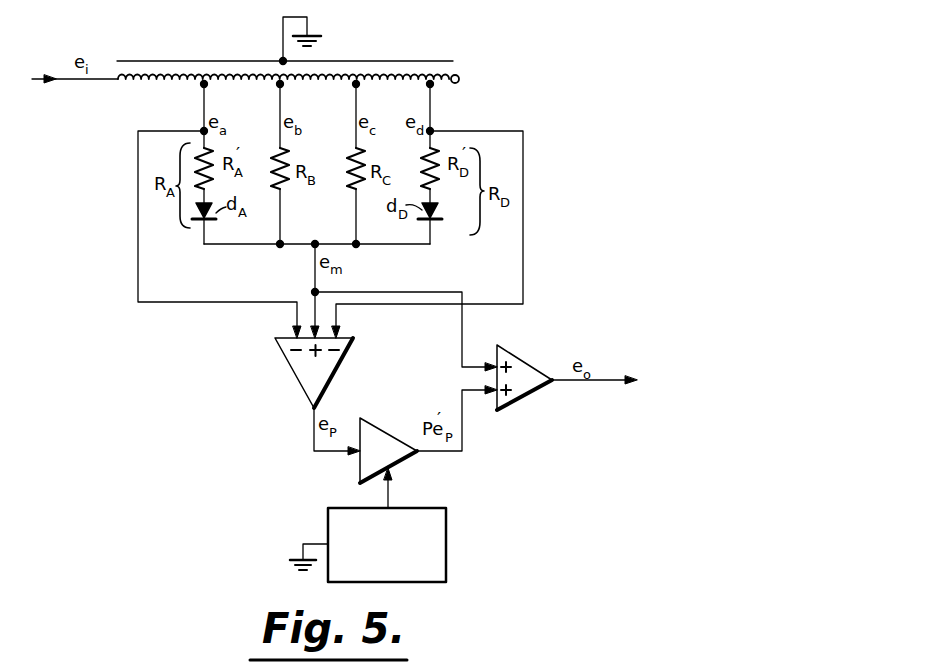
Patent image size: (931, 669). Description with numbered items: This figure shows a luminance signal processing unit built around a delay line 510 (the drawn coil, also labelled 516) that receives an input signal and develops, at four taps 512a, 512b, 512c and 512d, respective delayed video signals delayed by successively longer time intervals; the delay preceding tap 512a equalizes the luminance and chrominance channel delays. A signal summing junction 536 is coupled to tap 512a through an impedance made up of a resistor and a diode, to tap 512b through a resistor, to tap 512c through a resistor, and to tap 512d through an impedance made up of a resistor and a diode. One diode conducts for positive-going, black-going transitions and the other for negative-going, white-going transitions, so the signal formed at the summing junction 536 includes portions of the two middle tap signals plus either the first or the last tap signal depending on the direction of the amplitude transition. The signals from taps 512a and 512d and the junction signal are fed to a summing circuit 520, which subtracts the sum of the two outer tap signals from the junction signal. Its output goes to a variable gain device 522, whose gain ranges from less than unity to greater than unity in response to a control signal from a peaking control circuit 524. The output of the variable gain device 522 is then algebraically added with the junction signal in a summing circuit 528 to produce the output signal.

The delay line 510 is at (437, 53).
The delay line 516 is at (136, 71).
The tap 512a is at (204, 88).
The tap 512b is at (279, 88).
The tap 512c is at (355, 88).
The tap 512d is at (432, 88).
The signal summing junction 536 is at (311, 251).
The summing circuit 520 is at (288, 378).
The variable gain device 522 is at (357, 468).
The peaking control circuit 524 is at (449, 542).
The summing circuit 528 is at (528, 400).